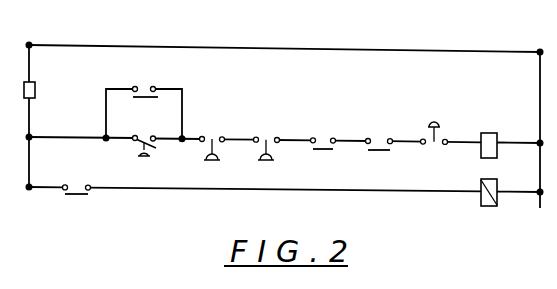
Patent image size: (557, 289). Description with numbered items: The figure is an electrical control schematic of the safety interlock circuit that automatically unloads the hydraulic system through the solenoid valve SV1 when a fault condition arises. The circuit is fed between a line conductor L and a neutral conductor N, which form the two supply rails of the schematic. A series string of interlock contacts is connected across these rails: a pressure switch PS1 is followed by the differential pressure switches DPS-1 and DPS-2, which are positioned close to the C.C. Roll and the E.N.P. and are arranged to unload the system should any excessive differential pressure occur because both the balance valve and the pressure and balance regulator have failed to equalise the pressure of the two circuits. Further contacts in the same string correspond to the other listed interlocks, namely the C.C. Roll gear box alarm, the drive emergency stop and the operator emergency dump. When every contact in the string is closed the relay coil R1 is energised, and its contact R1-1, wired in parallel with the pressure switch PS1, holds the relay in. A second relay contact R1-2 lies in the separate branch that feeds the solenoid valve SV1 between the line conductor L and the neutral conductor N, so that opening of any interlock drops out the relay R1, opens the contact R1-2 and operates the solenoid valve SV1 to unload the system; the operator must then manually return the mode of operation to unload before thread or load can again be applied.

The line conductor L is at (28, 26).
The neutral conductor N is at (539, 31).
The relay R1 holding contact R1-1 is at (144, 102).
The pressure switch PS1 is at (141, 134).
The differential pressure switch DPS-1 is at (211, 135).
The differential pressure switch DPS-2 is at (268, 135).
The relay coil R1 is at (487, 131).
The solenoid valve SV1 is at (487, 208).
The relay R1 contact R1-2 is at (79, 174).